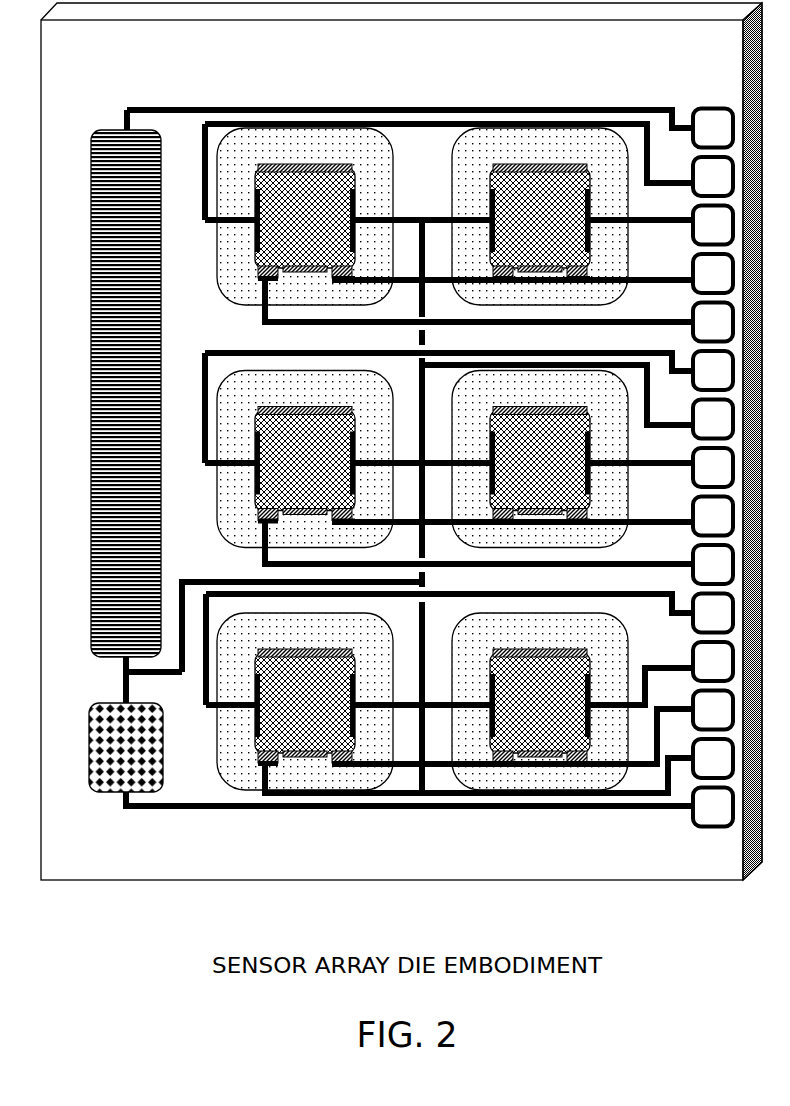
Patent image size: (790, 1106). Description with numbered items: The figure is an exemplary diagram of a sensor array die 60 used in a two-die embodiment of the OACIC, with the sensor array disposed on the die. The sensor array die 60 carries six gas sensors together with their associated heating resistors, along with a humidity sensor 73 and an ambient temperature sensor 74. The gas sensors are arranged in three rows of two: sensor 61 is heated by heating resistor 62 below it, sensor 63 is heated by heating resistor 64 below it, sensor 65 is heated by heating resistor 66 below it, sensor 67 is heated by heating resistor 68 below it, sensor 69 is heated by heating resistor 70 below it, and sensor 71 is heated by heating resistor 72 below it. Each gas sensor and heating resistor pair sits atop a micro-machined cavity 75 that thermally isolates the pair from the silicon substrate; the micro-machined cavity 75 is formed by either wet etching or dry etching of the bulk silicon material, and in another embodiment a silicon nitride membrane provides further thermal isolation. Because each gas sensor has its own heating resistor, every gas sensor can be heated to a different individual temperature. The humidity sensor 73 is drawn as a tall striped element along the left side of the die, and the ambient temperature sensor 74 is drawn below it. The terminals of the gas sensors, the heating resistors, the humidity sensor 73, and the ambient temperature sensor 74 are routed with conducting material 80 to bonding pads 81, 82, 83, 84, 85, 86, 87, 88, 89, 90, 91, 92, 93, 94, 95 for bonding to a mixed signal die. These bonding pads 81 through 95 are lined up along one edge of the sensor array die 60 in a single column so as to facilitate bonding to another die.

The sensor array die 60 is at (312, 73).
The sensor 61 is at (258, 186).
The heating resistor 62 is at (276, 165).
The sensor 63 is at (493, 186).
The heating resistor 64 is at (512, 165).
The sensor 65 is at (258, 428).
The heating resistor 66 is at (276, 408).
The sensor 67 is at (493, 428).
The heating resistor 68 is at (512, 408).
The sensor 69 is at (258, 671).
The heating resistor 70 is at (276, 650).
The sensor 71 is at (493, 671).
The heating resistor 72 is at (512, 650).
The humidity sensor 73 is at (163, 338).
The ambient temperature sensor 74 is at (165, 750).
The micro-machined cavity 75 is at (219, 272).
The conducting material 80 is at (478, 108).
The bonding pad 81 is at (705, 137).
The bonding pad 82 is at (705, 186).
The bonding pad 83 is at (705, 234).
The bonding pad 84 is at (705, 282).
The bonding pad 85 is at (705, 331).
The bonding pad 86 is at (705, 380).
The bonding pad 87 is at (705, 428).
The bonding pad 88 is at (705, 476).
The bonding pad 89 is at (705, 525).
The bonding pad 90 is at (705, 574).
The bonding pad 91 is at (705, 622).
The bonding pad 92 is at (705, 670).
The bonding pad 93 is at (705, 719).
The bonding pad 94 is at (705, 768).
The bonding pad 95 is at (705, 816).